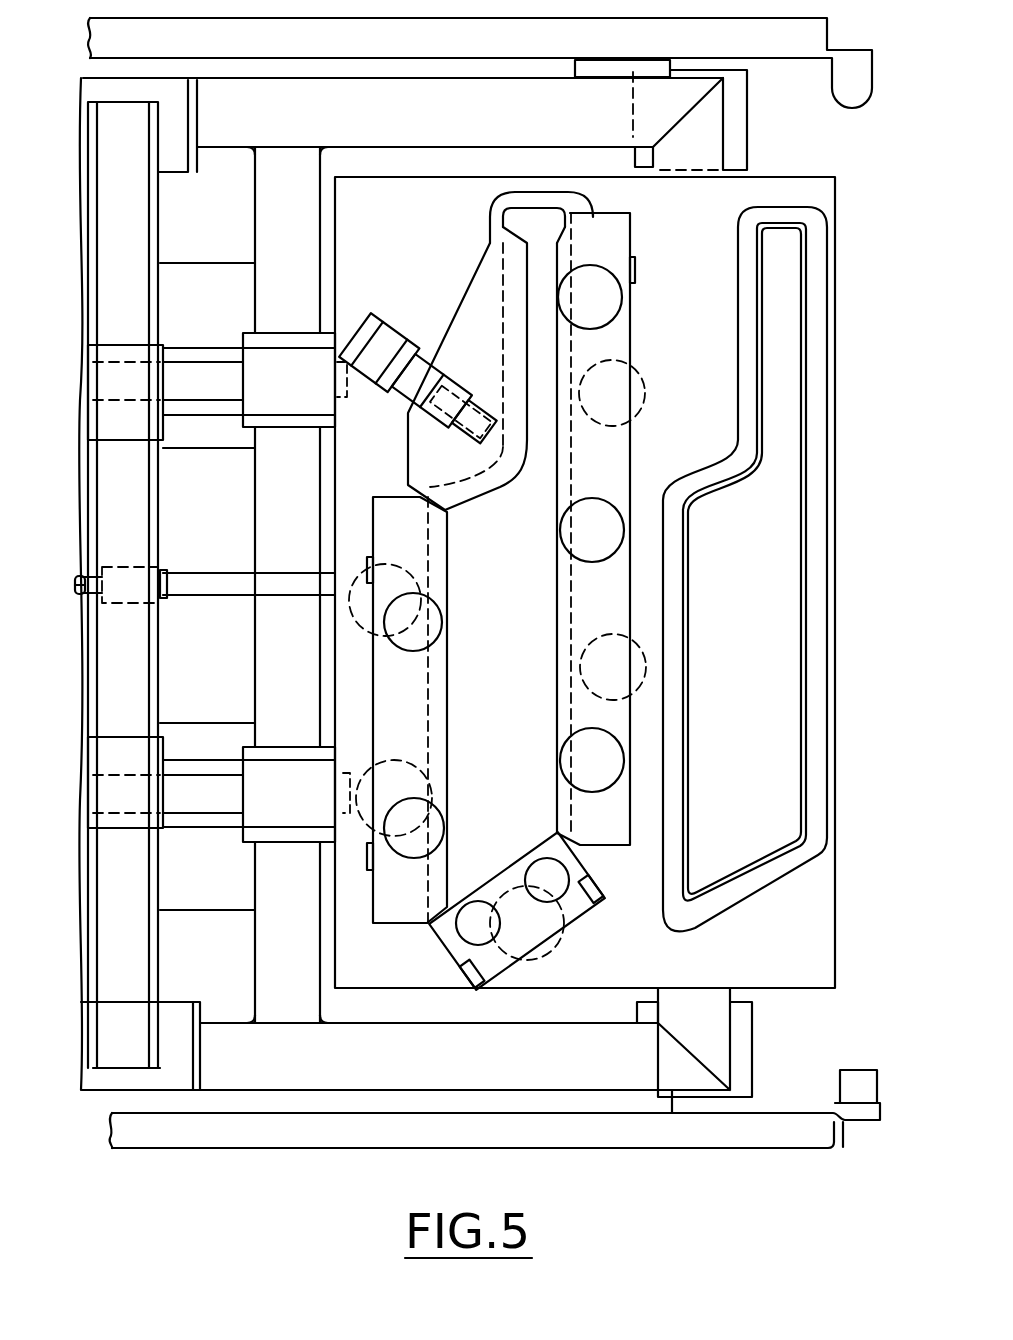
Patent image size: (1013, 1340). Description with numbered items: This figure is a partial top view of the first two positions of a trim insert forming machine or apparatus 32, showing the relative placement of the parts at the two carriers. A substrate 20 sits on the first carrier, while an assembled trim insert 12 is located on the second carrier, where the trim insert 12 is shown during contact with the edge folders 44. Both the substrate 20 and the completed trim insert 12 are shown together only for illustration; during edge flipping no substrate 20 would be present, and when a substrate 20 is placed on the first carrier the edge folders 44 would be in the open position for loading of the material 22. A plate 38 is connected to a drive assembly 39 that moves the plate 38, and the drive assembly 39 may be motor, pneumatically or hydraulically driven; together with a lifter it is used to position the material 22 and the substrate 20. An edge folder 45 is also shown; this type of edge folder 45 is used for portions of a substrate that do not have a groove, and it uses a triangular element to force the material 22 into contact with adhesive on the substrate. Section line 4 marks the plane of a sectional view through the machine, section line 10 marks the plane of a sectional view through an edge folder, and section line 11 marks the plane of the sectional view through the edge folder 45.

The section line 4- 4 is at (65, 540).
The section line 10- 10 is at (627, 907).
The section line 11- 11 is at (372, 220).
The trim insert 12 is at (528, 218).
The substrate 20 is at (563, 217).
The material 22 is at (542, 200).
The machine 32 is at (70, 100).
The plate 38 is at (835, 177).
The drive assembly 39 is at (182, 573).
The edge folders 44 is at (430, 933).
The edge folder 45 is at (446, 325).